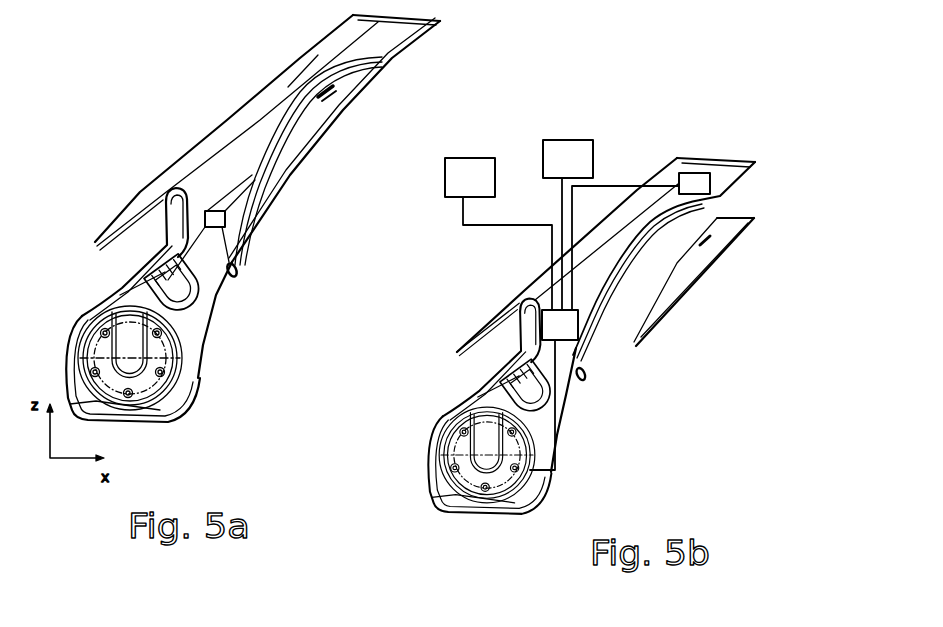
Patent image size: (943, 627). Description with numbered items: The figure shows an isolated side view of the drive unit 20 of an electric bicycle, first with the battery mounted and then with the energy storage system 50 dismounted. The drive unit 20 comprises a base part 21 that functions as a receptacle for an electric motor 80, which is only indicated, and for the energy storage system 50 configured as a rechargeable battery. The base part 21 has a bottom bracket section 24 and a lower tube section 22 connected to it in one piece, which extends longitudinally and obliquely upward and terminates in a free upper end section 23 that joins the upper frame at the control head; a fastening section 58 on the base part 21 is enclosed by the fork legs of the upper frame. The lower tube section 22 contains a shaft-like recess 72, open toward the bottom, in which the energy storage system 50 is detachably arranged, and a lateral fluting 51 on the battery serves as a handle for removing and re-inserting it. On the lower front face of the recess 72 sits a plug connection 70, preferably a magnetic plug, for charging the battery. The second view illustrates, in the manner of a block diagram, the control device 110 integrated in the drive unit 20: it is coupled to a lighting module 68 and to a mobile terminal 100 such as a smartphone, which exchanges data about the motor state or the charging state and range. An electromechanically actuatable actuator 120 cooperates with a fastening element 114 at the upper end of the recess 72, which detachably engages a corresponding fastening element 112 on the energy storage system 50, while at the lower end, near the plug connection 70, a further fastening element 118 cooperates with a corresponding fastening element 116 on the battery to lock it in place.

In FIG. 5A, the drive unit 20 is at (278, 248).
In FIG. 5B, the drive unit 20 is at (611, 328).
In FIG. 5A, the base part 21 is at (218, 180).
In FIG. 5A, the lower tube section 22 is at (265, 92).
In FIG. 5A, the end section 23 is at (442, 26).
In FIG. 5A, the bottom bracket section 24 is at (166, 420).
In FIG. 5B, the bottom bracket section 24 is at (489, 465).
In FIG. 5A, the energy storage system 50 is at (293, 140).
In FIG. 5B, the energy storage system 50 is at (714, 265).
In FIG. 5A, the lateral fluting 51 is at (331, 96).
In FIG. 5A, the fastening section 58 is at (190, 292).
In FIG. 5B, the fastening section 58 is at (529, 388).
In FIG. 5B, the lighting module 68 is at (560, 148).
In FIG. 5A, the plug connection 70 is at (225, 264).
In FIG. 5B, the plug connection 70 is at (581, 374).
In FIG. 5A, the recess 72 is at (213, 327).
In FIG. 5B, the recess 72 is at (518, 440).
In FIG. 5A, the electric motor 80 is at (178, 370).
In FIG. 5B, the electric motor 80 is at (520, 508).
In FIG. 5B, the terminal 100 is at (465, 173).
In FIG. 5A, the control device 110 is at (299, 173).
In FIG. 5B, the control device 110 is at (582, 348).
In FIG. 5B, the fastening element 112 is at (753, 216).
In FIG. 5B, the fastening element 114 is at (688, 205).
In FIG. 5B, the fastening element 116 is at (606, 259).
In FIG. 5B, the fastening element 118 is at (587, 322).
In FIG. 5B, the actuator 120 is at (698, 175).